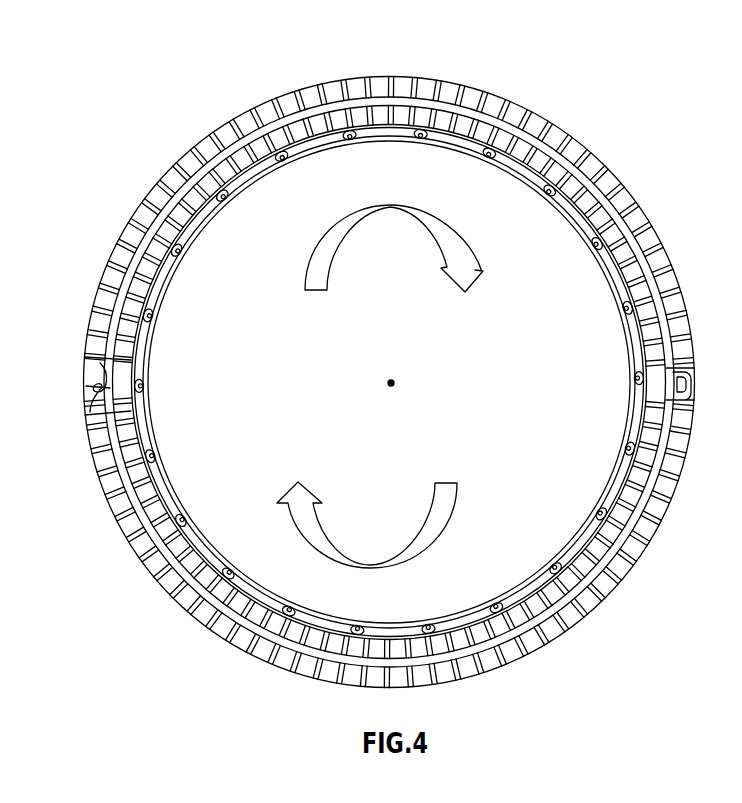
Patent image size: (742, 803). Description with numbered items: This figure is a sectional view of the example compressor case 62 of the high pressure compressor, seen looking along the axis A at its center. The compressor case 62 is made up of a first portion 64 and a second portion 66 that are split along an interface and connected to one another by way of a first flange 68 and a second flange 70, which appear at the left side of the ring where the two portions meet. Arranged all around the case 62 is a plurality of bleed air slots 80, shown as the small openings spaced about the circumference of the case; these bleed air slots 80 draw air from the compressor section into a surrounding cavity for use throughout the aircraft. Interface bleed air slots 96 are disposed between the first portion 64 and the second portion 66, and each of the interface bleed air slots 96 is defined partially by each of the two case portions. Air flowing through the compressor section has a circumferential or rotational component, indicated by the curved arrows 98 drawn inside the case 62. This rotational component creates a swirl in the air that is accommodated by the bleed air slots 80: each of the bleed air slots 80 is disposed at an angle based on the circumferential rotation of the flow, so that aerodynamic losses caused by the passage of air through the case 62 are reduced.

The compressor case 62 is at (486, 70).
The first portion 64 is at (546, 118).
The second portion 66 is at (332, 670).
The first flange 68 is at (92, 366).
The second flange 70 is at (92, 413).
The bleed air slots 80 is at (489, 162).
The interface bleed air slots 96 is at (146, 384).
The arrows 98 is at (325, 247).
The axis A is at (394, 381).